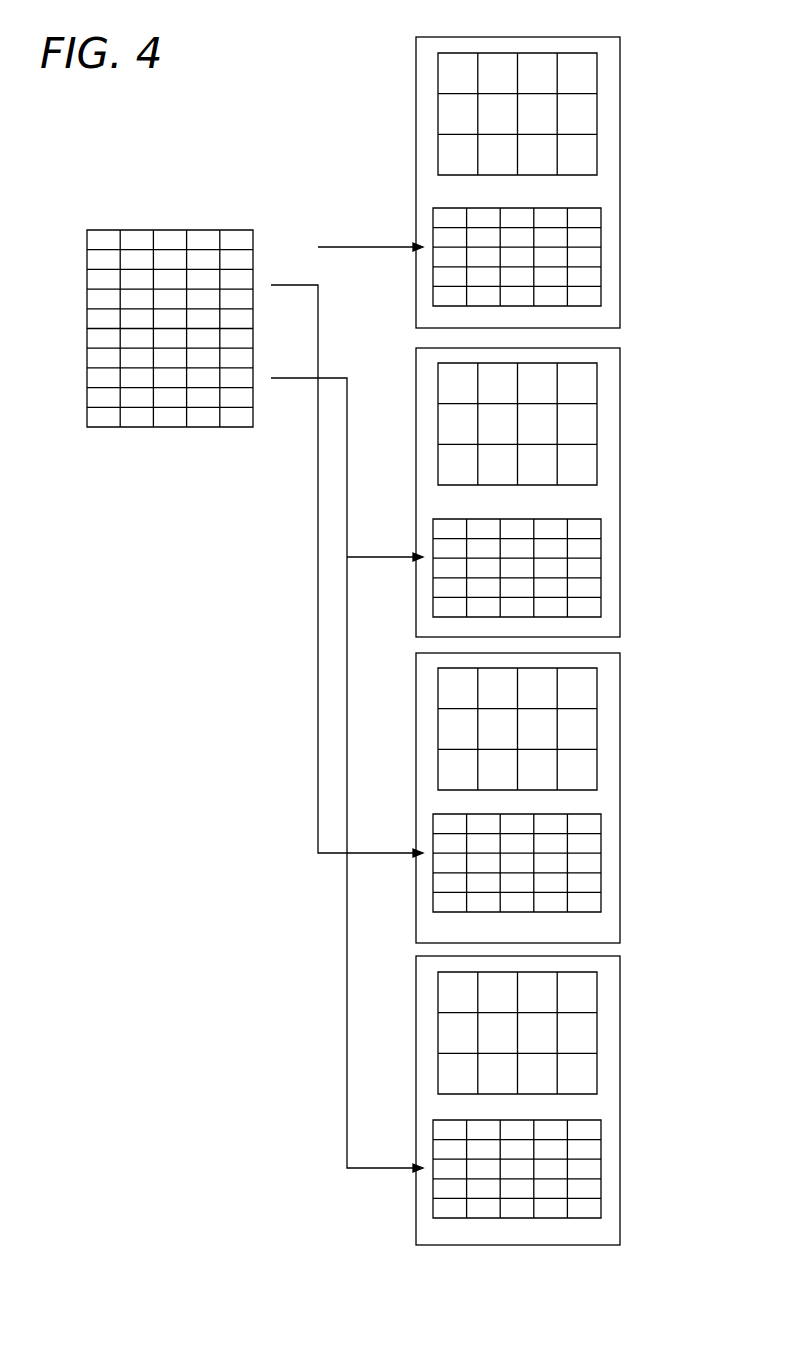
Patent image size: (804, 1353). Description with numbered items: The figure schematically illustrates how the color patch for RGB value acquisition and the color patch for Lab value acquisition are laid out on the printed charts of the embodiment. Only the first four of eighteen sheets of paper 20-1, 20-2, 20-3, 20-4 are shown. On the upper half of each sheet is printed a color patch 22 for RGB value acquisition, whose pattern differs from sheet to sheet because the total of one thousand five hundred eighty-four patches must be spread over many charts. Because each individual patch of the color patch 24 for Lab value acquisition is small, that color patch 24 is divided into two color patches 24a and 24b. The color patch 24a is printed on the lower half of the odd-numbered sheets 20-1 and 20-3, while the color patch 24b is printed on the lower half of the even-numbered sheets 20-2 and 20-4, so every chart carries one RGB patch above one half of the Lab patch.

The color patch for Lab value acquisition 24 is at (203, 230).
The color patch for RGB value acquisition 22 is at (438, 105).
The color patch for Lab value acquisition 24a is at (433, 222).
The color patch for Lab value acquisition 24b is at (433, 549).
The sheet of paper 20-1 is at (620, 205).
The sheet of paper 20-2 is at (620, 505).
The sheet of paper 20-3 is at (620, 812).
The sheet of paper 20-4 is at (620, 1115).